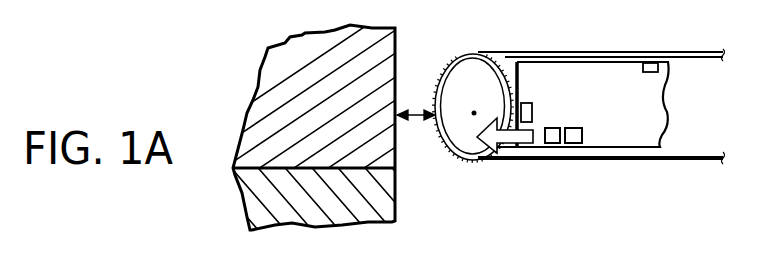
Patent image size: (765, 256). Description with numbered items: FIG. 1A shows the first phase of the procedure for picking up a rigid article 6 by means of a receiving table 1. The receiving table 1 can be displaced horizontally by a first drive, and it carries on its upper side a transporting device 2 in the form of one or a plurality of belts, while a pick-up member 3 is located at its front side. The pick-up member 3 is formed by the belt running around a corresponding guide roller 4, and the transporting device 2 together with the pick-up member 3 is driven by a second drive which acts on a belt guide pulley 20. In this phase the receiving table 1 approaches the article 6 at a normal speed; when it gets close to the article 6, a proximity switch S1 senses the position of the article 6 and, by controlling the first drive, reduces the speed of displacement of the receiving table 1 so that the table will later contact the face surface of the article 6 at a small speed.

The receiving table 1 is at (592, 198).
The transporting device 2 is at (662, 51).
The pick-up member 3 is at (437, 97).
The guide roller 4 is at (455, 143).
The rigid article 6 is at (322, 78).
The belt guide pulley 20 is at (652, 160).
The proximity switch S1 is at (530, 105).